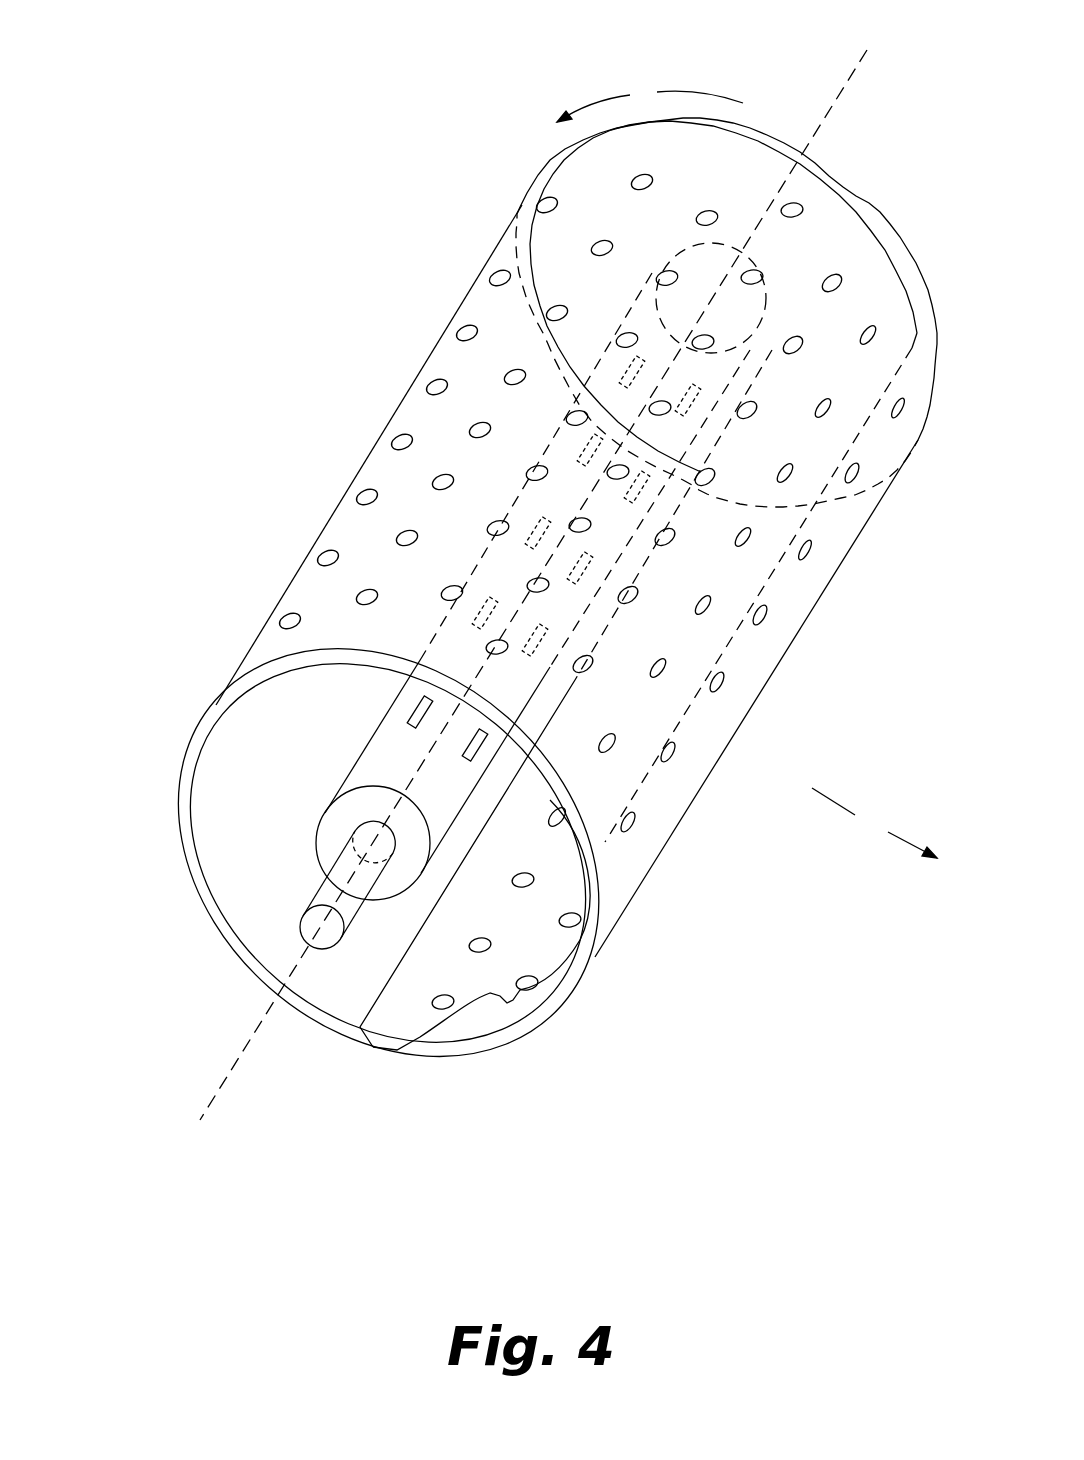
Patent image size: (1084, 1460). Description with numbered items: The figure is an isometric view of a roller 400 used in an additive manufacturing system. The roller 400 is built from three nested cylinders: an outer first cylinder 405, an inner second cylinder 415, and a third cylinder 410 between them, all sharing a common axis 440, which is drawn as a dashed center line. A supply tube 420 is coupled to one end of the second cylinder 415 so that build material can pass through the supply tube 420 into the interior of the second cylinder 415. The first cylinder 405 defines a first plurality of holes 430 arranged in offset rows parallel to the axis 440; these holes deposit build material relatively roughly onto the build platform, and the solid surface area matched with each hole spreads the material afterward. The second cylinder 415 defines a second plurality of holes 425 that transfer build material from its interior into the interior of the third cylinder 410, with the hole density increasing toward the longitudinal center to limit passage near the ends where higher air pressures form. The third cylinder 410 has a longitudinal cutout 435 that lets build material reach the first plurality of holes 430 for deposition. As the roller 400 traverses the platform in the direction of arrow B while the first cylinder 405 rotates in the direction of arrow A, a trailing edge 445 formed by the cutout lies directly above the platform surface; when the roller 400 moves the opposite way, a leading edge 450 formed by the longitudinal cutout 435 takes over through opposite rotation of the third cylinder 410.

The roller 400 is at (233, 68).
The first cylinder 405 is at (313, 542).
The third cylinder 410 is at (216, 722).
The second cylinder 415 is at (407, 873).
The supply tube 420 is at (325, 893).
The second plurality of holes 425 is at (473, 745).
The first plurality of holes 430 is at (363, 500).
The longitudinal cutout 435 is at (507, 1003).
The axis 440 is at (546, 571).
The trailing edge 445 is at (373, 1005).
The leading edge 450 is at (552, 810).